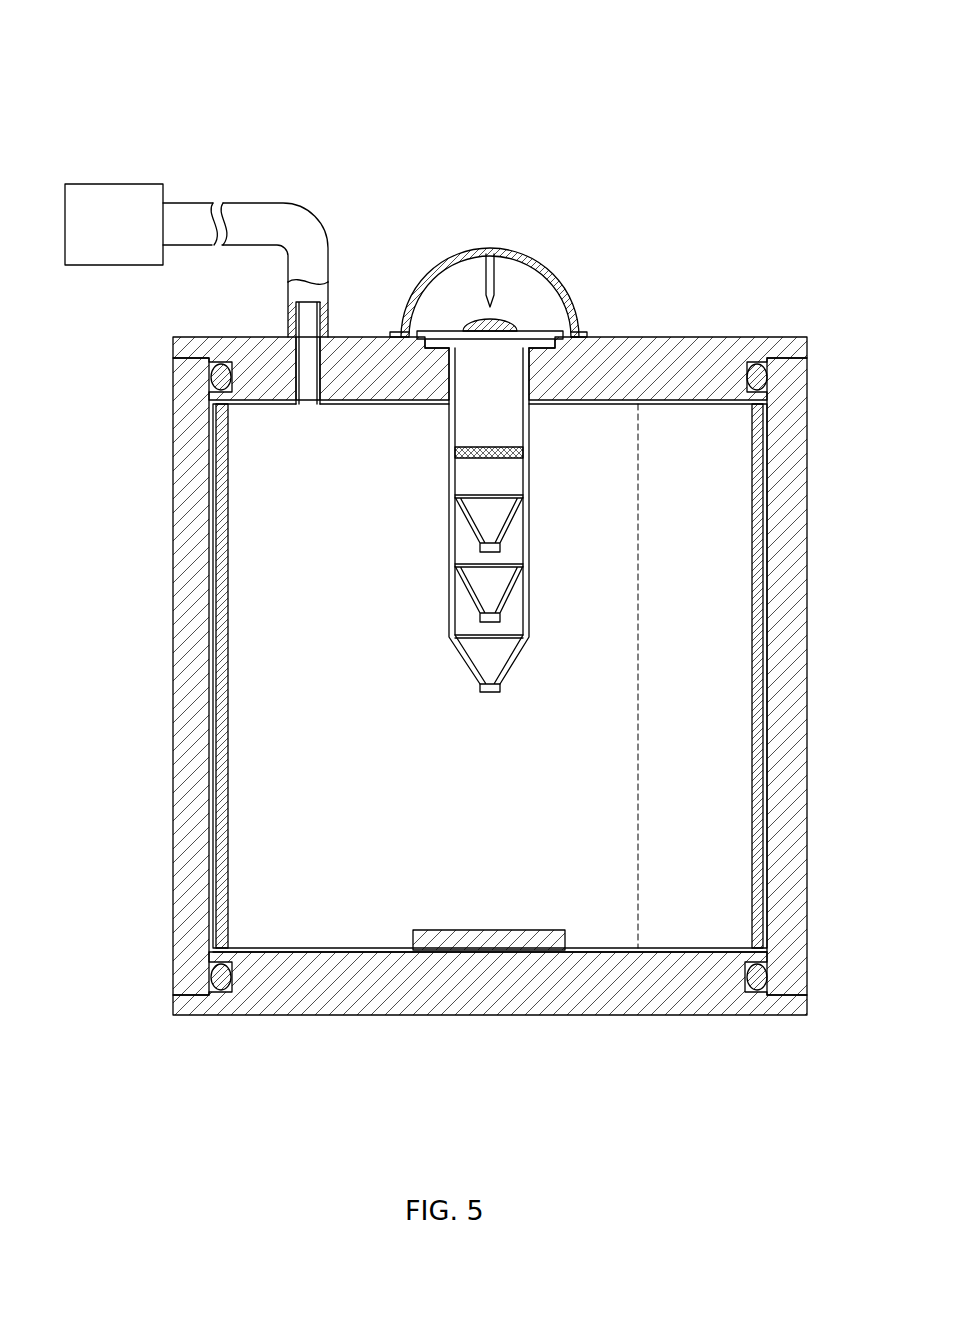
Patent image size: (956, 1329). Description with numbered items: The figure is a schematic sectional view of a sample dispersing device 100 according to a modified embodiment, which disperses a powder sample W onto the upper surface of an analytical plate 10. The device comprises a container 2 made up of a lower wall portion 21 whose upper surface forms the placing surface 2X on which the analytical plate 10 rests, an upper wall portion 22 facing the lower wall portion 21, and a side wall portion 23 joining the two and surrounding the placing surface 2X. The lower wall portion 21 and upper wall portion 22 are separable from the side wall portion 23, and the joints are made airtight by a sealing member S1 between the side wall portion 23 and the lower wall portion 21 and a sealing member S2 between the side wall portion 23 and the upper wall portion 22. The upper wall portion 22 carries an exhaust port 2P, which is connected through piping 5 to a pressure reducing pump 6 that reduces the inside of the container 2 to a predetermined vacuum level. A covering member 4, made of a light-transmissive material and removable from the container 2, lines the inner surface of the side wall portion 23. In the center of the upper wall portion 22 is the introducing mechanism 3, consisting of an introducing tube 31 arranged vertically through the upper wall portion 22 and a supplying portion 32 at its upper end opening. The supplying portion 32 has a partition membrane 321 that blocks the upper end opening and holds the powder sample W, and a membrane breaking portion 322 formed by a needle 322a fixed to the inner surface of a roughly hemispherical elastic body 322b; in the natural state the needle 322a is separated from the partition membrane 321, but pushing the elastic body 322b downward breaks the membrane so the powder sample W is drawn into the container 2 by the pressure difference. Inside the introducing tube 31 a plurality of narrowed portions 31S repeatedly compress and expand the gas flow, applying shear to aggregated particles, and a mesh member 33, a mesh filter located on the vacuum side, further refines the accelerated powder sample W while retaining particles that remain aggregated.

The sample dispersing device 100 is at (296, 93).
The container 2 is at (173, 540).
The exhaust port 2P is at (288, 330).
The placing surface 2X is at (507, 950).
The introducing mechanism 3 is at (553, 192).
The covering member 4 is at (222, 766).
The piping 5 is at (247, 203).
The pressure reducing pump 6 is at (112, 184).
The analytical plate 10 is at (447, 930).
The lower wall portion 21 is at (458, 1015).
The upper wall portion 22 is at (689, 337).
The side wall portion 23 is at (173, 645).
The introducing tube 31 is at (531, 526).
The narrowed portions 31S is at (478, 543).
The supplying portion 32 is at (551, 255).
The mesh member 33 is at (472, 445).
The partition membrane 321 is at (494, 340).
The membrane breaking portion 322 is at (525, 188).
The needle 322a is at (485, 287).
The elastic body 322b is at (514, 262).
The sealing member S1 is at (215, 978).
The sealing member S2 is at (215, 378).
The powder sample W is at (507, 322).